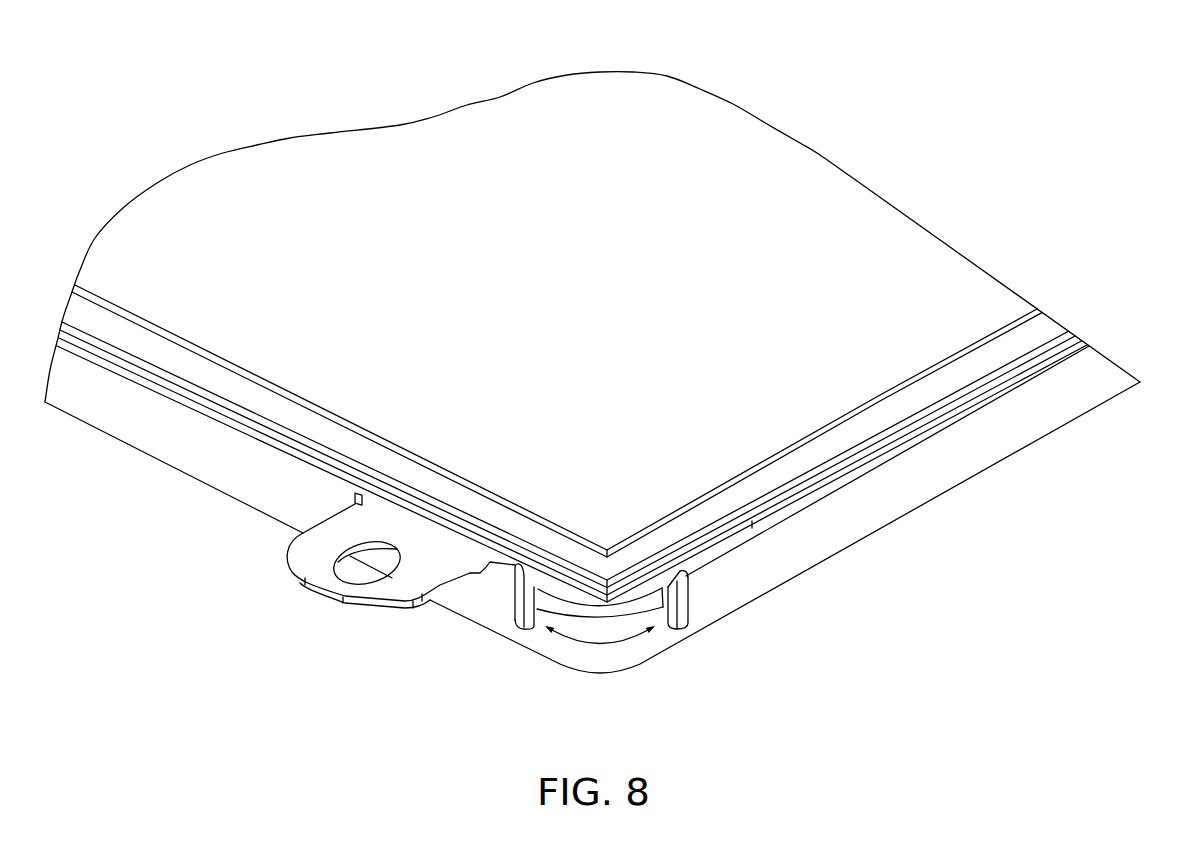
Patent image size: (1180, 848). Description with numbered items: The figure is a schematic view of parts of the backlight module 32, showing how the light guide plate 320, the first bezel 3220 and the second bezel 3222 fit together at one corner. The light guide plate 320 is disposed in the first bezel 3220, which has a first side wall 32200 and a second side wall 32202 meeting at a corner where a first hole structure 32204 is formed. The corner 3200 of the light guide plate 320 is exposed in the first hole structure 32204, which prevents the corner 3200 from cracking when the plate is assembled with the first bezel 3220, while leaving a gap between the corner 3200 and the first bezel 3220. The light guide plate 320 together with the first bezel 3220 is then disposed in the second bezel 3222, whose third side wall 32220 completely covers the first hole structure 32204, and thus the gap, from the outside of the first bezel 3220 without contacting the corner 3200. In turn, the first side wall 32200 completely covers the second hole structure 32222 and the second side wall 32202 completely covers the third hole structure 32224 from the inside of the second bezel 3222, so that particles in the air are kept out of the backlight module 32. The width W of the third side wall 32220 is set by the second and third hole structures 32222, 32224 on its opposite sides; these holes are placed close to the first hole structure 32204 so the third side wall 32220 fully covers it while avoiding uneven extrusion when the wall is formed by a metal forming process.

The backlight module 32 is at (983, 84).
The light guide plate 320 is at (1046, 323).
The corner of the light guide plate 3200 is at (598, 580).
The first side wall 32200 is at (534, 588).
The second side wall 32202 is at (672, 588).
The first hole structure 32204 is at (622, 588).
The first bezel 3220 is at (348, 475).
The second bezel 3222 is at (460, 638).
The third side wall 32220 is at (593, 667).
The second hole structure 32222 is at (523, 628).
The third hole structure 32224 is at (682, 632).